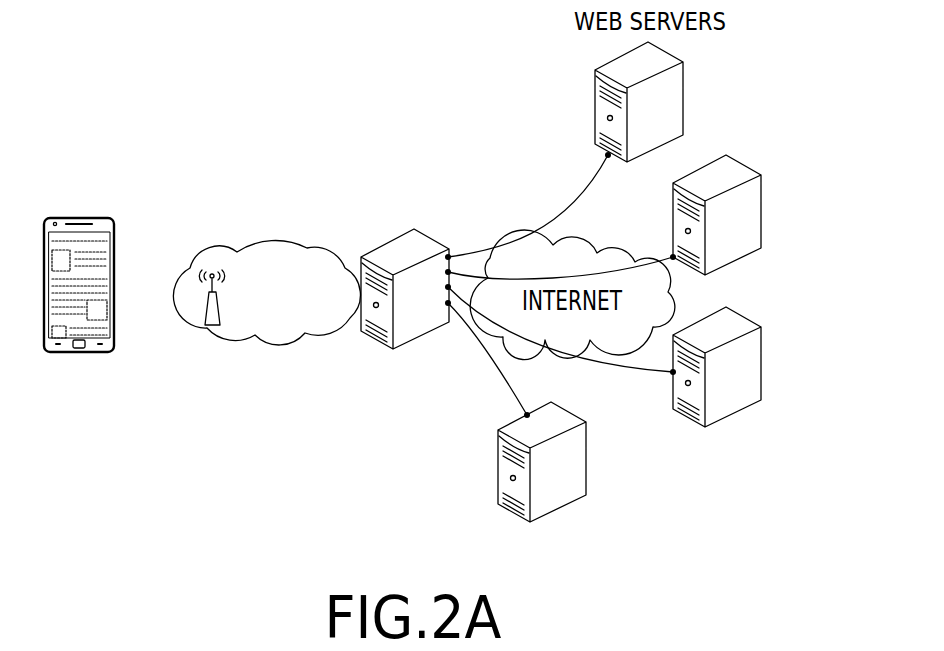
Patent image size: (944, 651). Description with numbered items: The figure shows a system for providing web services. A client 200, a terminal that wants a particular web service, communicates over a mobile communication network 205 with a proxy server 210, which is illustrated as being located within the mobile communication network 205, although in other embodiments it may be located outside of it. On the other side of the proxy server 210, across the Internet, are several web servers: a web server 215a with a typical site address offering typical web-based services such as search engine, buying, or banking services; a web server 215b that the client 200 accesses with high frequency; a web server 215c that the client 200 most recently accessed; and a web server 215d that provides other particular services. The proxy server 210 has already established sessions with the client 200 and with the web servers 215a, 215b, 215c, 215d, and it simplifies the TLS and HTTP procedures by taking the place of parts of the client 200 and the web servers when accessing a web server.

The client 200 is at (77, 217).
The mobile communication network 205 is at (269, 243).
The proxy server 210 is at (413, 229).
The web server 215a is at (685, 93).
The web server 215b is at (761, 205).
The web server 215c is at (761, 357).
The web server 215d is at (588, 452).